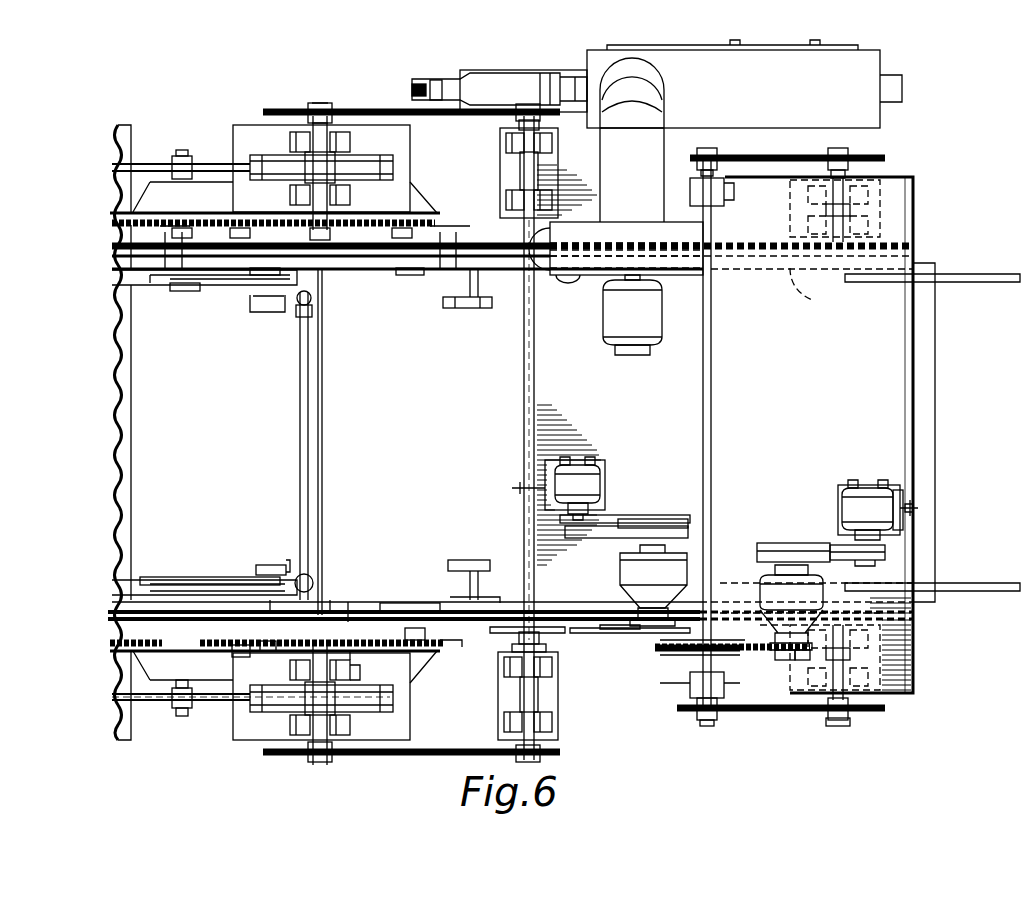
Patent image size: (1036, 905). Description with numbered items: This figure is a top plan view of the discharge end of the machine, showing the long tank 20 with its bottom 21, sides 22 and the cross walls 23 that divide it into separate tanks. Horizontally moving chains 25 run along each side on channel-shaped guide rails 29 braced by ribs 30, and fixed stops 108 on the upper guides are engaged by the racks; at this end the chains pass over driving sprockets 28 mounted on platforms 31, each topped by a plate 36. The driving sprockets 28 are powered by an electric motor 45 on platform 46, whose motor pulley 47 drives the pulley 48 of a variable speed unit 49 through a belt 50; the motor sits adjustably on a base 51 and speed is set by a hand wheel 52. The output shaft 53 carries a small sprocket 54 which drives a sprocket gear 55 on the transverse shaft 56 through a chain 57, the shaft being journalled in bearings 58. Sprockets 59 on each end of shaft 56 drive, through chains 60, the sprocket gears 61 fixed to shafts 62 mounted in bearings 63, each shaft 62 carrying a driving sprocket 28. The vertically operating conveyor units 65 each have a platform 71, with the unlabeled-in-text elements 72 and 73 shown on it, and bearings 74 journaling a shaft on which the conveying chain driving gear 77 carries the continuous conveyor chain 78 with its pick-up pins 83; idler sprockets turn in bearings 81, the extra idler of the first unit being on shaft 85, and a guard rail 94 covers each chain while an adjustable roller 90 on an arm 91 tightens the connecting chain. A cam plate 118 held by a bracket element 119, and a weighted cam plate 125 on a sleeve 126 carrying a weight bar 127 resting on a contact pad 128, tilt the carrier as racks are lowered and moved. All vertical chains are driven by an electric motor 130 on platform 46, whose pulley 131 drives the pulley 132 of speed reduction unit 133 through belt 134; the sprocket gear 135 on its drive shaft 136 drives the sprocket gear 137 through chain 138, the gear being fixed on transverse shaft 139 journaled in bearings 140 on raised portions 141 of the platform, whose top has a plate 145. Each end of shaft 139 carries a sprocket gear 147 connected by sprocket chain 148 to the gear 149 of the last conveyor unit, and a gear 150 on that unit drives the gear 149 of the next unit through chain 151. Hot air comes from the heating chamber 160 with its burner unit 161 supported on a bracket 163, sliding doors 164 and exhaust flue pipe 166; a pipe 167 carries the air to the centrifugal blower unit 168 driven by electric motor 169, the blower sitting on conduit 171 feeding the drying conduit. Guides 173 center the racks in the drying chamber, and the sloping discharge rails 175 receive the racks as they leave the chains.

The tank 20 is at (340, 608).
The bottom 21 is at (152, 497).
The sides 22 is at (420, 600).
The cross walls 23 is at (322, 485).
The horizontally moving chains 25 is at (360, 610).
The driving sprockets 28 is at (868, 616).
The channel-shaped guide rails 29 is at (400, 603).
The ribs 30 is at (500, 592).
The platforms 31 is at (885, 672).
The plate 36 is at (900, 684).
The electric motor 45 is at (850, 500).
The platform 46 is at (916, 425).
The motor pulley 47 is at (873, 567).
The pulley 48 is at (788, 543).
The variable speed unit 49 is at (762, 590).
The belt 50 is at (835, 552).
The base 51 is at (905, 524).
The hand wheel 52 is at (915, 502).
The output shaft 53 is at (805, 655).
The small sprocket 54 is at (785, 660).
The sprocket gear 55 is at (700, 645).
The shaft 56 is at (712, 505).
The chain 57 is at (762, 647).
The bearings 58 is at (714, 197).
The sprocket 59 is at (712, 150).
The chains 60 is at (782, 157).
The sprocket gears 61 is at (843, 150).
The shaft 62 is at (845, 720).
The bearings 63 is at (862, 668).
The vertically operating conveyor units 65 is at (150, 647).
The platform 71 is at (245, 727).
The bearing 72 is at (352, 728).
The bearing 73 is at (345, 715).
The bearings 74 is at (360, 670).
The conveying chain driving gear 77 is at (333, 608).
The conveyor chain 78 is at (437, 646).
The bearings 81 is at (426, 634).
The pick-up pins 83 is at (245, 650).
The shaft 85 is at (200, 670).
The adjustable roller 90 is at (175, 704).
The arm 91 is at (180, 716).
The guard rail 94 is at (352, 672).
The fixed stops 108 is at (265, 652).
The cam plate 118 is at (468, 551).
The bracket element 119 is at (470, 582).
The weighted cam plates 125 is at (266, 565).
The sleeve 126 is at (300, 574).
The weight bar 127 is at (208, 590).
The contact pad 128 is at (158, 587).
The electric motor 130 is at (600, 487).
The pulley 131 is at (600, 521).
The pulley 132 is at (668, 514).
The speed reduction unit 133 is at (620, 572).
The belt 134 is at (615, 537).
The sprocket gear 135 is at (650, 630).
The drive shaft 136 is at (630, 600).
The sprocket gear 137 is at (502, 632).
The chain 138 is at (595, 630).
The shaft 139 is at (524, 456).
The bearings 140 is at (540, 185).
The raised portions 141 is at (500, 165).
The plate 145 is at (916, 380).
The sprocket gear 147 is at (512, 115).
The sprocket chain 148 is at (455, 118).
The gear 149 is at (322, 112).
The gear 150 is at (300, 705).
The chain 151 is at (220, 702).
The heating chamber 160 is at (860, 120).
The burner unit 161 is at (486, 82).
The bracket 163 is at (515, 80).
The sliding doors 164 is at (650, 47).
The exhaust flue pipe 166 is at (902, 95).
The pipe 167 is at (648, 145).
The centrifugal blower unit 168 is at (612, 232).
The electric motor 169 is at (650, 322).
The conduit 171 is at (572, 278).
The guides 173 is at (978, 282).
The discharge rails 175 is at (980, 583).